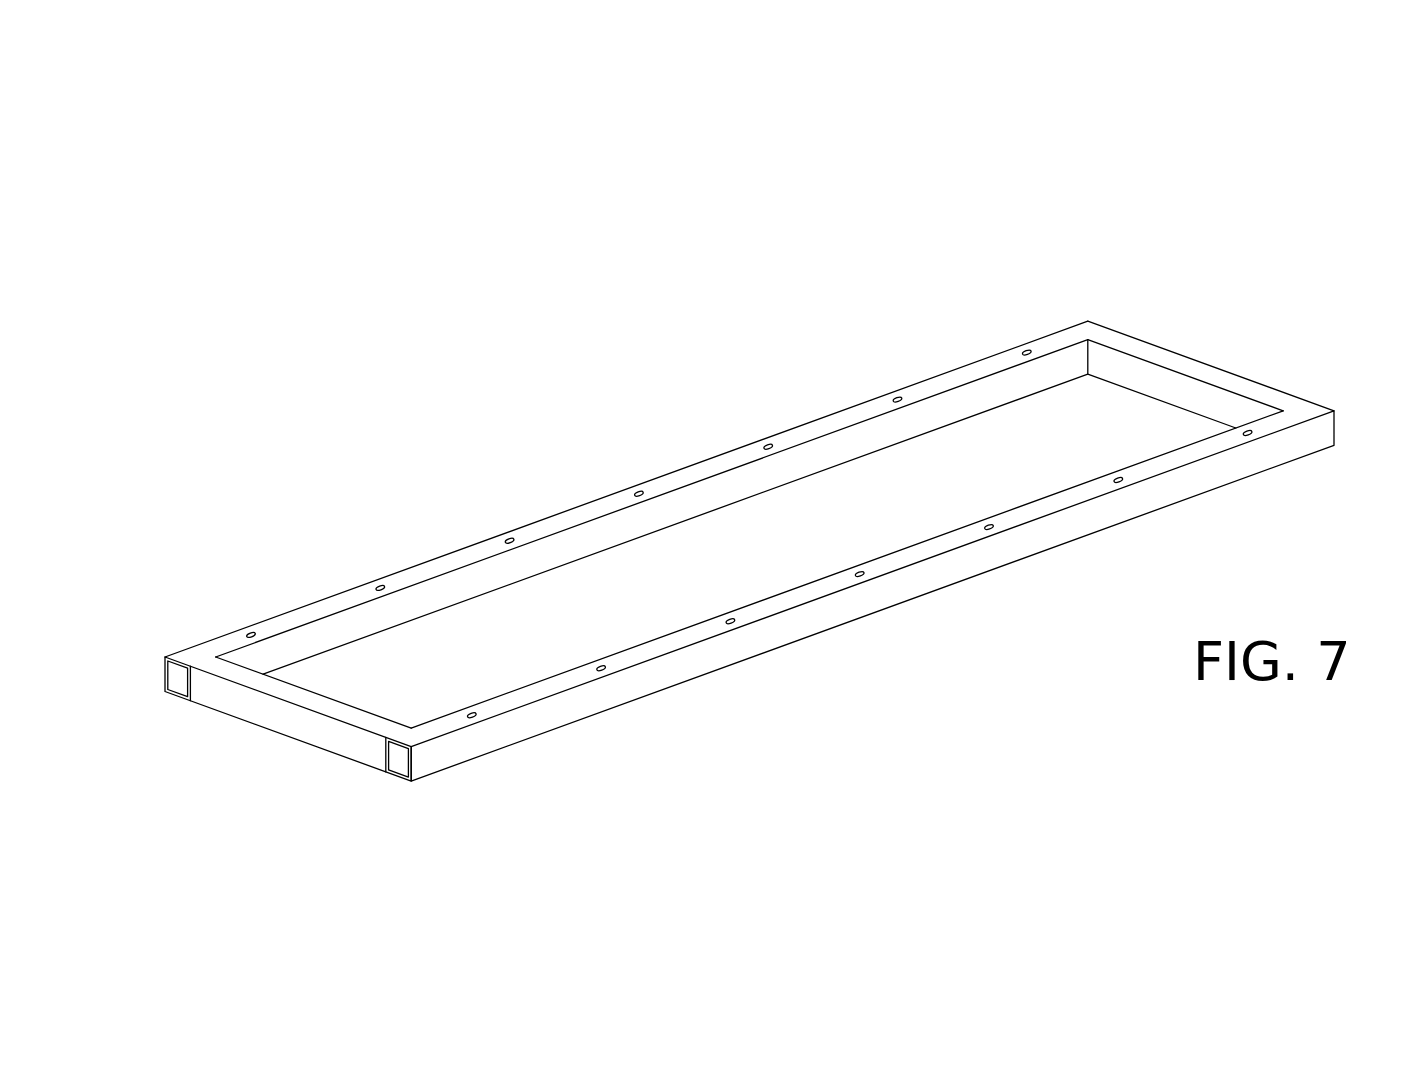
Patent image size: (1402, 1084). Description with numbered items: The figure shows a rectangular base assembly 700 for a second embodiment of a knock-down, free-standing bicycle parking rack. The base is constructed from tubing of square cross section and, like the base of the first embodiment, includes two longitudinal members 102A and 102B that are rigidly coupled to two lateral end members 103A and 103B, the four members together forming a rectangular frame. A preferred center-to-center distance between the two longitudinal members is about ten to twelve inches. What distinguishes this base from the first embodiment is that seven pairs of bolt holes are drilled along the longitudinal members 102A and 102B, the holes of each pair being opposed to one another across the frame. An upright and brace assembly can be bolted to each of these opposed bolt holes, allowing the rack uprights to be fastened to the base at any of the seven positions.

The rectangular base assembly 700 is at (1186, 262).
The longitudinal member 102A is at (690, 475).
The longitudinal member 102B is at (845, 610).
The lateral end member 103A is at (286, 722).
The lateral end member 103B is at (1197, 368).